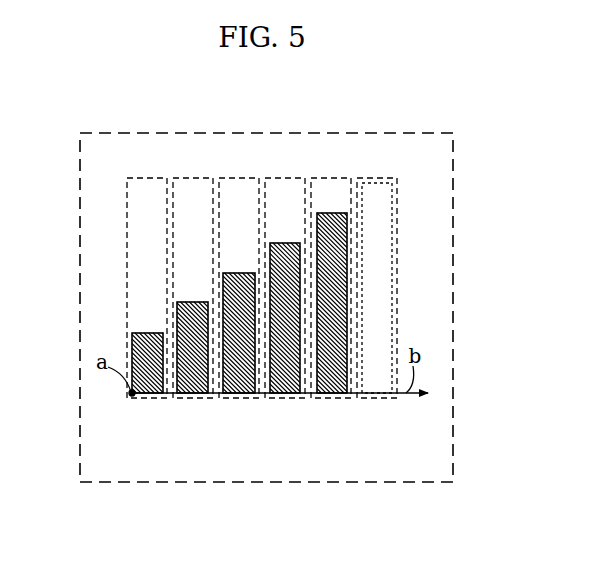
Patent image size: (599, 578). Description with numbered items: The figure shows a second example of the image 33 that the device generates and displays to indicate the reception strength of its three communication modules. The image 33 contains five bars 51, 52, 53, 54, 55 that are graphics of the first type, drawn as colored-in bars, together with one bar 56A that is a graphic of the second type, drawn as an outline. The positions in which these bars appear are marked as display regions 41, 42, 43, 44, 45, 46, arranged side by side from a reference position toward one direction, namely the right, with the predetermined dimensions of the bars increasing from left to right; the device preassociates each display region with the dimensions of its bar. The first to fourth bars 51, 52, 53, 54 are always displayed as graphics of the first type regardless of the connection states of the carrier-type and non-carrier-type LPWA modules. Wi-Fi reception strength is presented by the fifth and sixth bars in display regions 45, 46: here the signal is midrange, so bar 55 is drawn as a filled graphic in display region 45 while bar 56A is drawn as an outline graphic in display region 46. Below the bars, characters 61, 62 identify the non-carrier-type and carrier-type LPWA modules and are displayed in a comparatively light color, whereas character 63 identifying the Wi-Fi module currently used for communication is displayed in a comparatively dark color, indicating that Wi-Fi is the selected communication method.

The image 33 is at (376, 133).
The display region 41 is at (143, 178).
The display region 42 is at (185, 178).
The display region 43 is at (234, 178).
The display region 44 is at (282, 178).
The display region 45 is at (325, 178).
The display region 46 is at (372, 178).
The bar 51 is at (146, 333).
The bar 52 is at (191, 302).
The bar 53 is at (237, 273).
The bar 54 is at (283, 243).
The bar 55 is at (330, 213).
The bar 56A is at (392, 200).
The character 61 is at (166, 454).
The character 62 is at (262, 454).
The character 63 is at (357, 454).